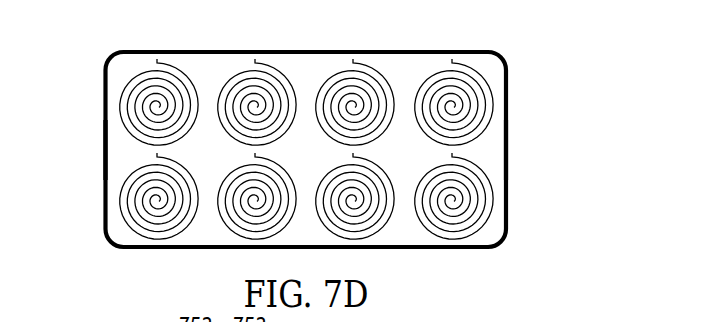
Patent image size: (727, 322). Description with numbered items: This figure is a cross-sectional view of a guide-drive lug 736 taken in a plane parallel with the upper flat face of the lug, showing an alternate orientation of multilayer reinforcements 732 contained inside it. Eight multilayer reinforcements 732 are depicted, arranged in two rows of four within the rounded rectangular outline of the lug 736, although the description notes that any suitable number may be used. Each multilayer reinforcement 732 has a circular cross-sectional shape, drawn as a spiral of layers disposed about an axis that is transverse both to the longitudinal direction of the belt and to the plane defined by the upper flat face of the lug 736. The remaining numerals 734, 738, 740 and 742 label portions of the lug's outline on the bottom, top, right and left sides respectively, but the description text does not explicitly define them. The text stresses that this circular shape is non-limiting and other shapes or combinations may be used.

The multilayer reinforcement 732 is at (248, 61).
The bottom edge of housing 734 is at (445, 249).
The guide-drive lug 736 is at (411, 51).
The top edge of housing 738 is at (173, 50).
The right side edge 740 is at (508, 148).
The left side edge 742 is at (104, 149).